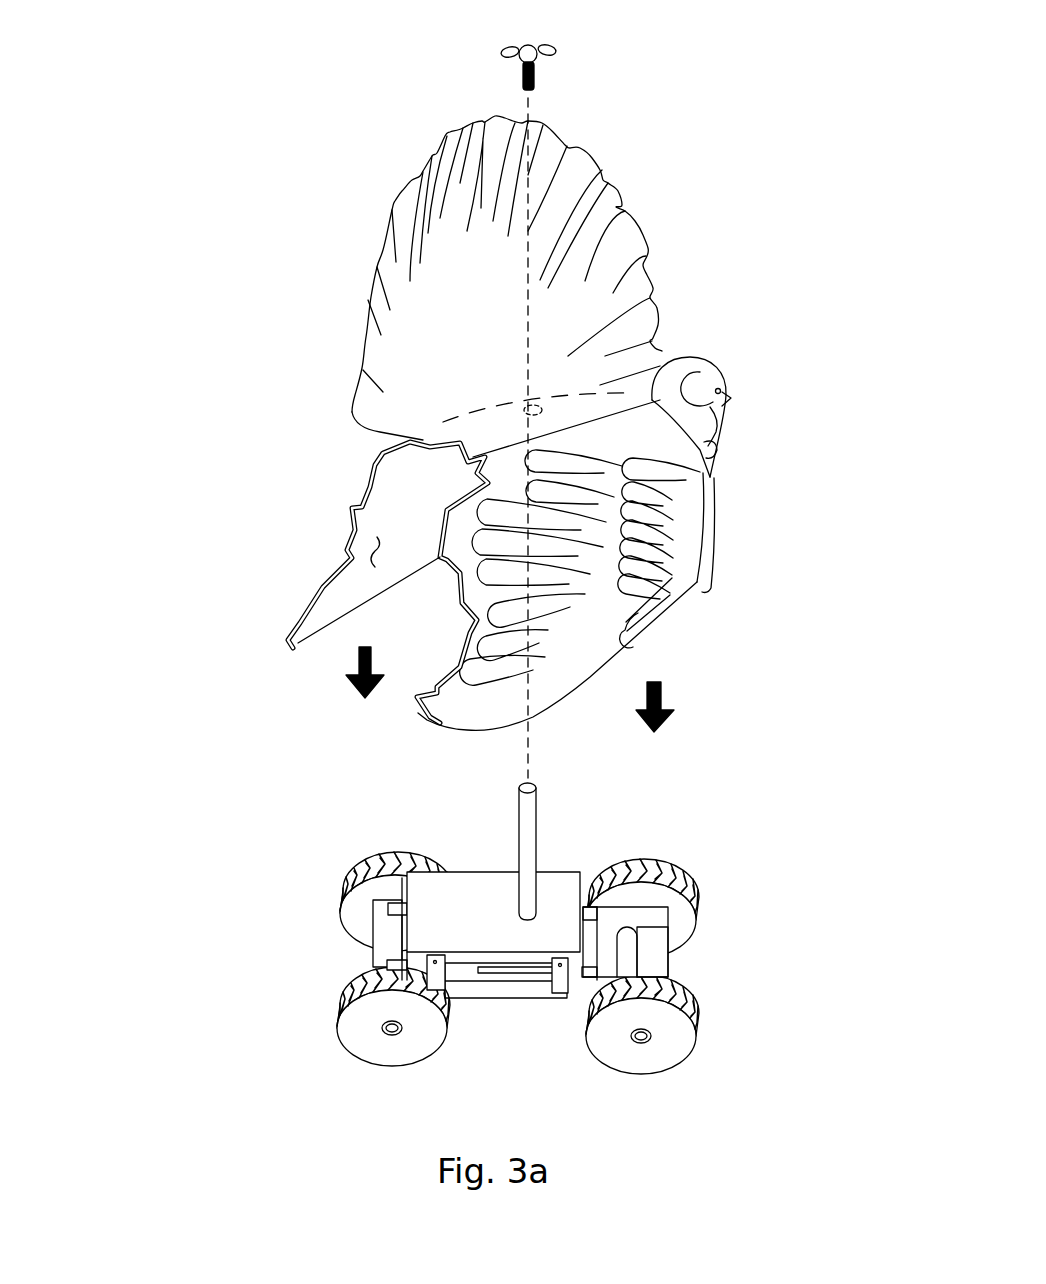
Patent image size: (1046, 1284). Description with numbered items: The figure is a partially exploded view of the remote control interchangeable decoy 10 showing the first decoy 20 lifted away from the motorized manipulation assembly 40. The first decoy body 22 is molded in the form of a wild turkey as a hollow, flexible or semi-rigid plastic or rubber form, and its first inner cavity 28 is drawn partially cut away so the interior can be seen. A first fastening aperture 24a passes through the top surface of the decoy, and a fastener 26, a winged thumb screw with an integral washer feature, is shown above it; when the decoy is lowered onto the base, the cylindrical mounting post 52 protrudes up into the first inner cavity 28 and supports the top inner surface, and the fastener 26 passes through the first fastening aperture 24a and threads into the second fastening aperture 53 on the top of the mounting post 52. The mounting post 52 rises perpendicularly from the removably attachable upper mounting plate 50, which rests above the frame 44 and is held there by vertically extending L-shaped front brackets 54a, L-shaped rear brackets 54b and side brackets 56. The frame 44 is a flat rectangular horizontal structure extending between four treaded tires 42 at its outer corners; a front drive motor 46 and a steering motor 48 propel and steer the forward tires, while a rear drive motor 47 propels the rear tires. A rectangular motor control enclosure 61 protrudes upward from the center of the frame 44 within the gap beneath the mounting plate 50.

The remote control interchangeable decoy 10 is at (155, 106).
The first decoy 20 is at (256, 727).
The first decoy body 22 is at (720, 420).
The first fastening aperture 24a is at (550, 407).
The fastener 26 is at (555, 50).
The first inner cavity 28 is at (375, 550).
The motorized manipulation assembly 40 is at (262, 1015).
The treaded tires 42 is at (357, 870).
The frame 44 is at (538, 993).
The front drive motor 46 is at (630, 937).
The rear drive motor 47 is at (415, 960).
The steering motor 48 is at (658, 953).
The mounting plate 50 is at (460, 877).
The mounting post 52 is at (532, 813).
The second fastening aperture 53 is at (519, 786).
The front brackets 54a is at (588, 910).
The rear brackets 54b is at (387, 963).
The side brackets 56 is at (437, 973).
The motor control enclosure 61 is at (513, 973).